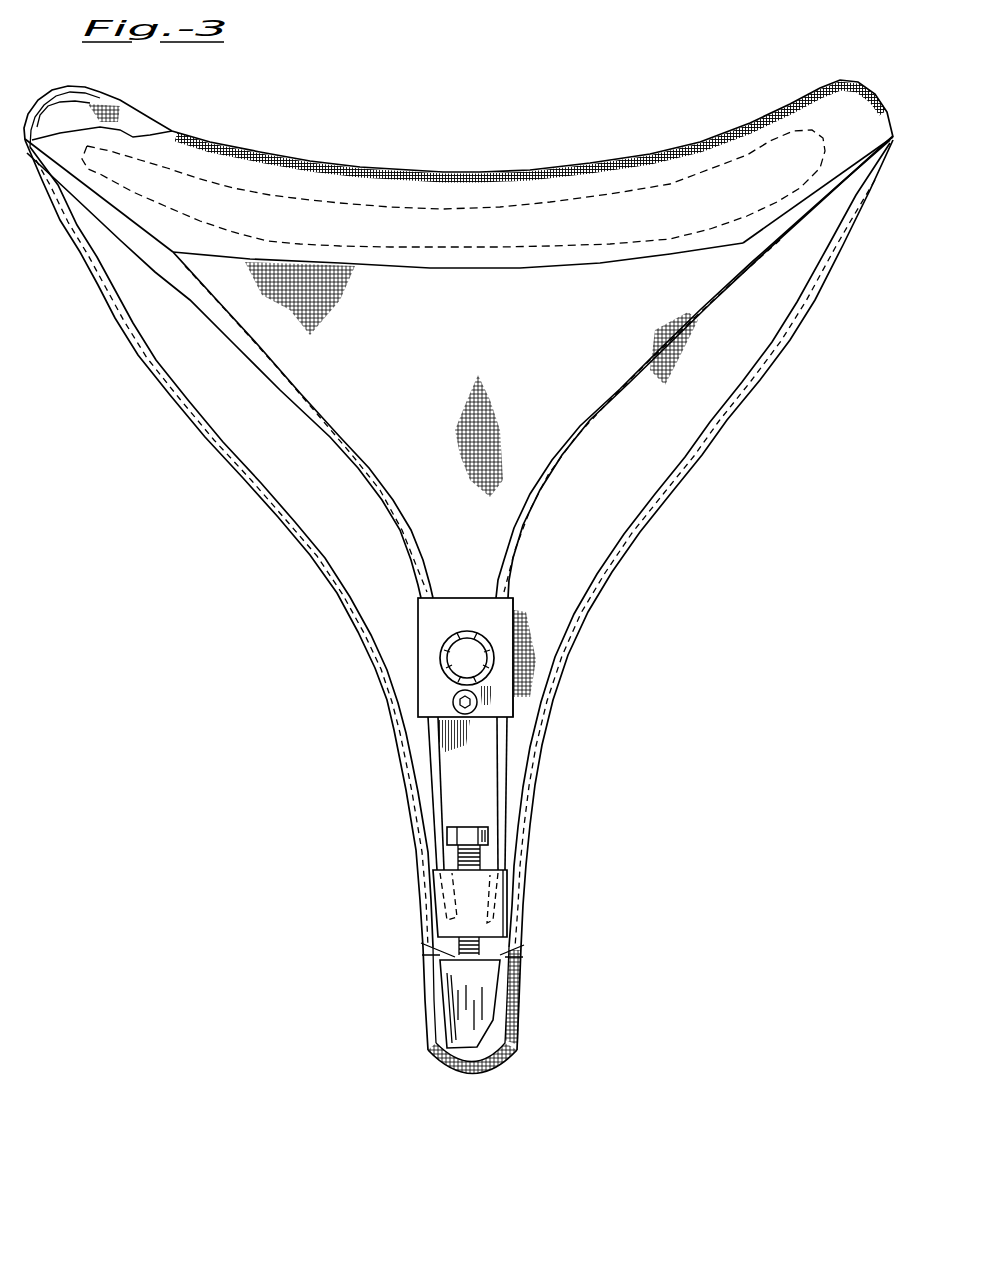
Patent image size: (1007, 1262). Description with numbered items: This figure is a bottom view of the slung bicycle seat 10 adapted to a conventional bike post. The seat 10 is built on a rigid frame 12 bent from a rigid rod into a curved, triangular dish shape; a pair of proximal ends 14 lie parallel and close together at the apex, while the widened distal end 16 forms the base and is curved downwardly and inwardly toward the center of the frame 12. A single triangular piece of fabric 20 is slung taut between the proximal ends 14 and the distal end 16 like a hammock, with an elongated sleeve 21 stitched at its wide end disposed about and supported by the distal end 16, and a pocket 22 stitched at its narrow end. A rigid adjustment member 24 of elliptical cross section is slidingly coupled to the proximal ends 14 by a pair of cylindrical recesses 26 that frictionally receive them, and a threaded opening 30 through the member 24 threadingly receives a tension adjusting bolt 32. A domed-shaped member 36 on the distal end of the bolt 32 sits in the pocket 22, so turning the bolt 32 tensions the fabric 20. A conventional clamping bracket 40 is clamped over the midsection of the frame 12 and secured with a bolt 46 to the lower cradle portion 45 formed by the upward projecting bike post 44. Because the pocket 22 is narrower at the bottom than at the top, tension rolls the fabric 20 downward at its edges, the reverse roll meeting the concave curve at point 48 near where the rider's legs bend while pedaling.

The bicycle seat 10 is at (292, 602).
The rigid frame 12 is at (330, 437).
The proximal ends 14 is at (423, 737).
The distal end 16 is at (443, 173).
The fabric 20 is at (470, 349).
The elongated sleeve 21 is at (498, 188).
The pocket 22 is at (490, 943).
The adjustment member 24 is at (438, 905).
The cylindrical recesses 26 is at (440, 870).
The threaded opening 30 is at (455, 867).
The tension adjusting bolt 32 is at (450, 825).
The domed-shaped member 36 is at (423, 997).
The clamping bracket 40 is at (445, 597).
The bike post 44 is at (443, 645).
The lower cradle portion 45 is at (515, 603).
The bolt 46 is at (455, 702).
The reverse roll point 48 is at (402, 780).